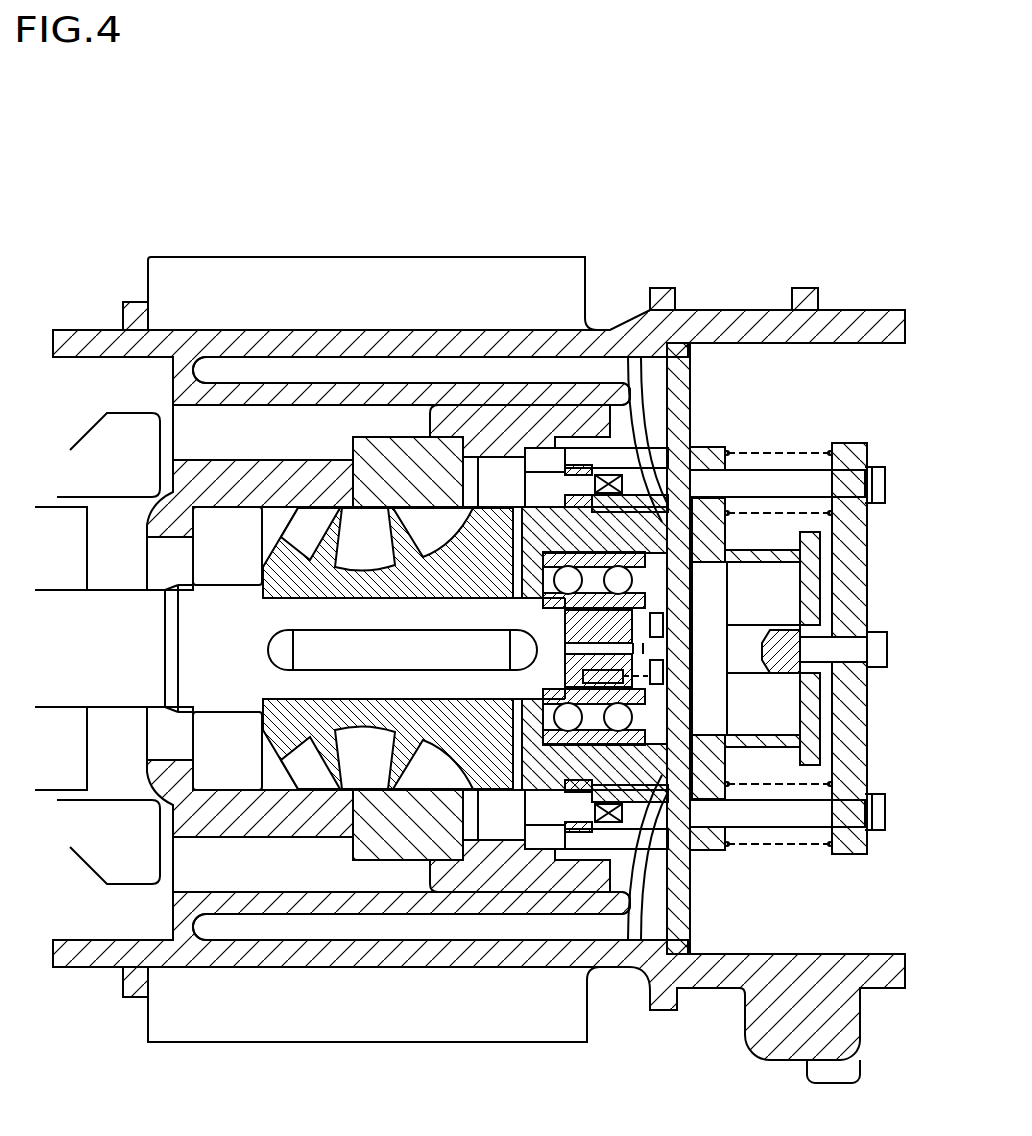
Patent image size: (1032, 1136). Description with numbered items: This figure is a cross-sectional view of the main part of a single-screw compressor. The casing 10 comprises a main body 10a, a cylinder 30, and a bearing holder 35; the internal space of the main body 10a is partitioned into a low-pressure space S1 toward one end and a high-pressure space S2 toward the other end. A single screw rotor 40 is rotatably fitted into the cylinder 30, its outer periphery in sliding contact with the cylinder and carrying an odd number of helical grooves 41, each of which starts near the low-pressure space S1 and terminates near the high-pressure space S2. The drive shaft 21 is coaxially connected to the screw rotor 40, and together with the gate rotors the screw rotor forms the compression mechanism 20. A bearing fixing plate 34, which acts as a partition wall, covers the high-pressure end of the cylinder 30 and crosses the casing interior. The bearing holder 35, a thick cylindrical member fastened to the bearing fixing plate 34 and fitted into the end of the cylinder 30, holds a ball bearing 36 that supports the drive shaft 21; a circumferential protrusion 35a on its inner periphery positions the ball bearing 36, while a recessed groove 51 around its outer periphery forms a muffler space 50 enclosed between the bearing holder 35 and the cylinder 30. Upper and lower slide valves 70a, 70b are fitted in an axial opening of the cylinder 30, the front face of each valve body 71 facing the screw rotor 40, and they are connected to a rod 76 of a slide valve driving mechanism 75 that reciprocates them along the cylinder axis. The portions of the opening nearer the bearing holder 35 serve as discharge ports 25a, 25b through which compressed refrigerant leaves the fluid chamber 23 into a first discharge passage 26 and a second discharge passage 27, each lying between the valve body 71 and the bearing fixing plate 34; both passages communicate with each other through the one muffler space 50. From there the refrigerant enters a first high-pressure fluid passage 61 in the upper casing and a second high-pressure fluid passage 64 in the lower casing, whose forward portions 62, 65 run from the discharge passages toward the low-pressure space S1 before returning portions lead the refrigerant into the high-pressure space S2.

The casing 10 is at (866, 306).
The main body 10a is at (210, 330).
The compression mechanism 20 is at (246, 563).
The drive shaft 21 is at (45, 588).
The fluid chamber 23 is at (355, 533).
The discharge port 25a is at (478, 470).
The discharge port 25b is at (478, 850).
The first discharge passage 26 is at (630, 462).
The second discharge passage 27 is at (610, 843).
The cylinder 30 is at (235, 484).
The bearing fixing plate 34 is at (686, 360).
The bearing holder 35 is at (547, 500).
The circumferential protrusion 35a is at (512, 800).
The ball bearing 36 is at (556, 752).
The screw rotor 40 is at (262, 752).
The helical groove 41 is at (286, 790).
The muffler space 50 is at (676, 435).
The recessed groove 51 is at (690, 445).
The first high-pressure fluid passage 61 is at (318, 380).
The forward portion 62 is at (260, 372).
The second high-pressure fluid passage 64 is at (318, 920).
The forward portion 65 is at (252, 930).
The slide valve 70a is at (410, 438).
The slide valve 70b is at (422, 862).
The valve body 71 is at (370, 470).
The slide valve driving mechanism 75 is at (876, 579).
The rod 76 is at (808, 470).
The low-pressure space S1 is at (96, 930).
The high-pressure space S2 is at (764, 362).